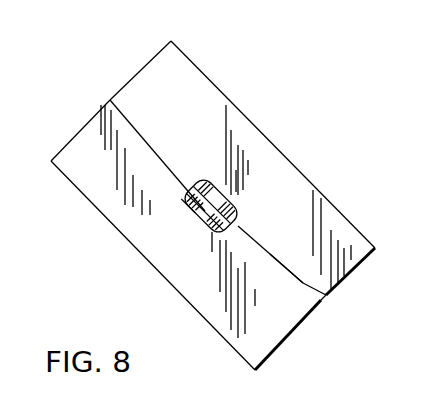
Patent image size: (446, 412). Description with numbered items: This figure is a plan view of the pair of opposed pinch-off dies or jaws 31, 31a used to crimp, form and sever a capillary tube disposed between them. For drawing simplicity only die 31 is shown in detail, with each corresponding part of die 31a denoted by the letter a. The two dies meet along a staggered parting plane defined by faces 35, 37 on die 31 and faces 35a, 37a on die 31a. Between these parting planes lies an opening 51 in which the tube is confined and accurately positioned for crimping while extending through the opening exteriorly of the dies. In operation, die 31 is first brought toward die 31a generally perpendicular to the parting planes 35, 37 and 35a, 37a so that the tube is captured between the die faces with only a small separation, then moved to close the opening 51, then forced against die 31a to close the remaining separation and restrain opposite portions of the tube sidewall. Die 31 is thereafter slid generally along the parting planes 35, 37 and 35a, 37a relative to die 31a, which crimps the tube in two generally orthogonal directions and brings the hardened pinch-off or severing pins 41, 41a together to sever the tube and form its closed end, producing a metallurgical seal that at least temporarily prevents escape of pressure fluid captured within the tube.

The pinch-off die 31 is at (356, 270).
The pinch-off die 31a is at (301, 326).
The parting plane face 35 is at (128, 127).
The parting plane face 35a is at (123, 125).
The parting plane face 37 is at (265, 242).
The parting plane face 37a is at (285, 270).
The pinch-off pin 41 is at (206, 183).
The pinch-off pin 41a is at (208, 228).
The opening 51 is at (202, 228).